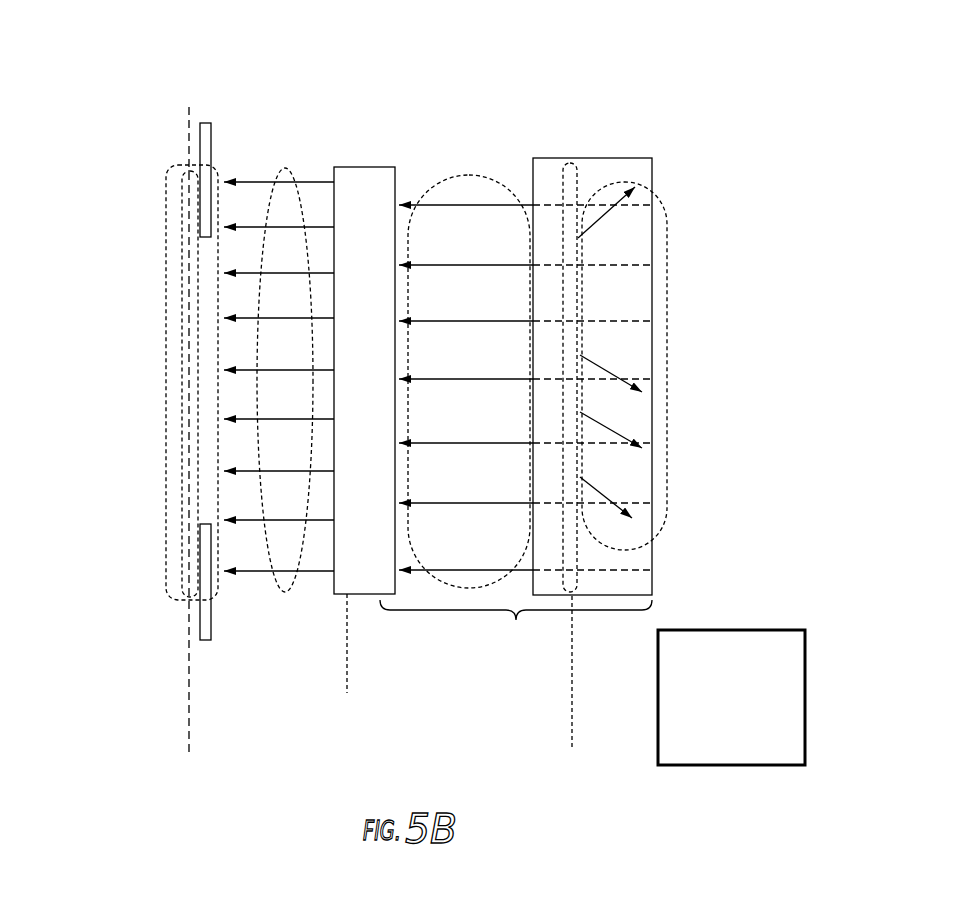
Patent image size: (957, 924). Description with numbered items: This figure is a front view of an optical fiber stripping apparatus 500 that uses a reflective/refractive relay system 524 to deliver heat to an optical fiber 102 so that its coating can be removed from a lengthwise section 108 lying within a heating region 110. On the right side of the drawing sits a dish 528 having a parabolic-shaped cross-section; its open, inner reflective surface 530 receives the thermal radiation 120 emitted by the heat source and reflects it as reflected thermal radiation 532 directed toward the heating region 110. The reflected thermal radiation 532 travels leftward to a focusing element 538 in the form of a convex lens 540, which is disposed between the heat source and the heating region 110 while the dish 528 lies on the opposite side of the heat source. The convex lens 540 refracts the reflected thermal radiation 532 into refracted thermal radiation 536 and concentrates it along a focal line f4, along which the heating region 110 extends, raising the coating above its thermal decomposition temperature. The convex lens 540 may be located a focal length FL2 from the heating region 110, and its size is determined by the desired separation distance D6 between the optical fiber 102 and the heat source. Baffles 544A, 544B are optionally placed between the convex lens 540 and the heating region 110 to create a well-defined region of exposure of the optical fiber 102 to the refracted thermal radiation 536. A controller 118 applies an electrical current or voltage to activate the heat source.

The optical fiber stripping apparatus 500 is at (622, 108).
The optical fiber 102 is at (174, 224).
The lengthwise section 108 is at (181, 280).
The heating region 110 is at (190, 157).
The baffle 544A is at (212, 137).
The baffle 544B is at (212, 605).
The focusing element 538 is at (325, 160).
The refracted thermal radiation 536 is at (279, 590).
The convex lens 540 is at (357, 167).
The reflected thermal radiation 532 is at (470, 175).
The reflective/refractive relay system 524 is at (516, 429).
The dish 528 is at (638, 158).
The thermal radiation 120 is at (667, 263).
The reflective surface 530 is at (650, 345).
The controller 118 is at (577, 592).
The focal line f4 is at (188, 587).
The focal length FL2 is at (191, 668).
The separation distance D6 is at (191, 705).